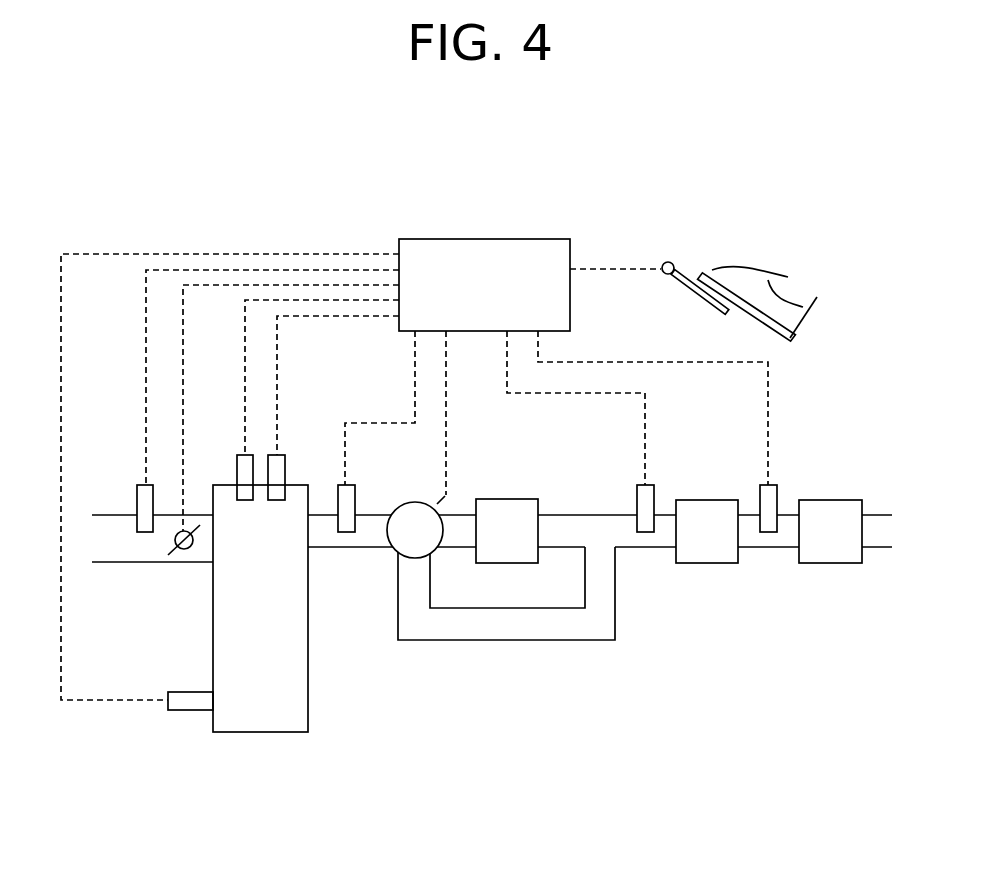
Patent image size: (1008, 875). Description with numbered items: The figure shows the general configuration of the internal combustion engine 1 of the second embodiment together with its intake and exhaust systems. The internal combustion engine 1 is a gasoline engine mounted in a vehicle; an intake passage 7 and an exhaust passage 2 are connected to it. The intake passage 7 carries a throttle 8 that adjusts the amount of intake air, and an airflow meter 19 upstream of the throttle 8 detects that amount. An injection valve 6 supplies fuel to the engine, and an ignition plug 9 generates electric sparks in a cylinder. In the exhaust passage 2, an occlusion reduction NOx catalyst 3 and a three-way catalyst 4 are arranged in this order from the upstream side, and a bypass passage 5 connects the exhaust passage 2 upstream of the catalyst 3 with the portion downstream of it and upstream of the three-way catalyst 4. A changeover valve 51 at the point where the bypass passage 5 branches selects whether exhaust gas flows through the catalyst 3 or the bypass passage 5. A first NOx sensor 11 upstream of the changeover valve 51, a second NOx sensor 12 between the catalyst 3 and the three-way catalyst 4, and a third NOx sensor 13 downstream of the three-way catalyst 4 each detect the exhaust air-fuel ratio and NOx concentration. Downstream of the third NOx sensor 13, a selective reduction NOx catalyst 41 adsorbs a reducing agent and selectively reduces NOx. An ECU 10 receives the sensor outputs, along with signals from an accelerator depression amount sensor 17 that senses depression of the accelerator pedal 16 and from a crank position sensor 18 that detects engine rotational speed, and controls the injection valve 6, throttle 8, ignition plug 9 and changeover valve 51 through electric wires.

The internal combustion engine 1 is at (309, 702).
The exhaust passage 2 is at (577, 515).
The occlusion reduction NOx catalyst 3 is at (510, 499).
The three-way catalyst 4 is at (708, 564).
The selective reduction NOx catalyst 41 is at (830, 564).
The bypass passage 5 is at (522, 641).
The changeover valve 51 is at (399, 550).
The injection valve 6 is at (285, 458).
The intake passage 7 is at (147, 563).
The throttle 8 is at (184, 549).
The ignition plug 9 is at (237, 458).
The ECU 10 is at (407, 332).
The first NOx sensor 11 is at (355, 493).
The second NOx sensor 12 is at (655, 493).
The third NOx sensor 13 is at (778, 492).
The accelerator pedal 16 is at (745, 318).
The accelerator depression amount sensor 17 is at (662, 273).
The crank position sensor 18 is at (193, 692).
The airflow meter 19 is at (138, 486).